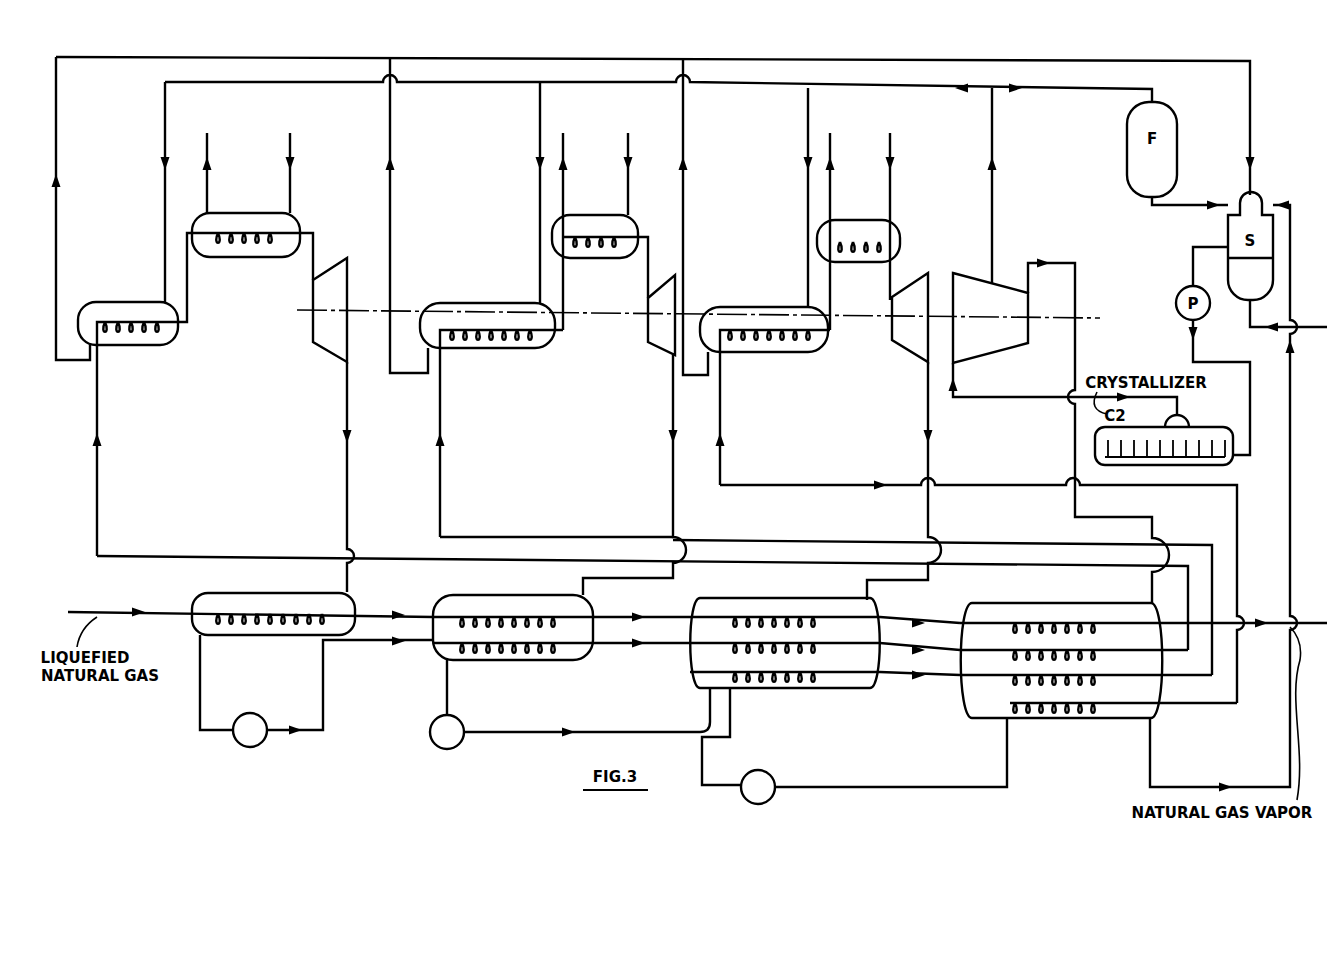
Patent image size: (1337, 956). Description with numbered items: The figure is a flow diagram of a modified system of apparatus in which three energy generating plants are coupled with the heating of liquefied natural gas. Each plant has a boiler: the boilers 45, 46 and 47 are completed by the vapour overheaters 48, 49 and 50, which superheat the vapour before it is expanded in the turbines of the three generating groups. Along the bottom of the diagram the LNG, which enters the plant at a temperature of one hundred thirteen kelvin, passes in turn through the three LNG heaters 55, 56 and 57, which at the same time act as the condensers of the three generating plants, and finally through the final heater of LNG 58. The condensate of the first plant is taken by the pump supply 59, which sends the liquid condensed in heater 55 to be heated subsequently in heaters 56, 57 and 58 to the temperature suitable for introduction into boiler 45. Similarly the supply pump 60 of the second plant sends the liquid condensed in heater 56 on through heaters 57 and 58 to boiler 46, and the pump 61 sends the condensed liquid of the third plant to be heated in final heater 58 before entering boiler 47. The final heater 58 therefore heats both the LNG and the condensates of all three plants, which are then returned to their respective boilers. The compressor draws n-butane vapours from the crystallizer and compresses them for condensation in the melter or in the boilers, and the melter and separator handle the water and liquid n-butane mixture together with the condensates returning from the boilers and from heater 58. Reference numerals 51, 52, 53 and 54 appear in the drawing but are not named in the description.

The boiler 45 is at (128, 310).
The boiler 46 is at (487, 311).
The boiler 47 is at (764, 314).
The vapour overheater 48 is at (246, 221).
The vapour overheater 49 is at (595, 222).
The vapour overheater 50 is at (858, 227).
The compressor C1 51 is at (990, 305).
The expansion turbine I 52 is at (330, 323).
The expansion turbine II 53 is at (658, 329).
The expansion turbine III 54 is at (910, 330).
The LNG heater 55 is at (273, 605).
The LNG heater 56 is at (513, 618).
The LNG heater 57 is at (785, 634).
The final heater of LNG 58 is at (1062, 649).
The pump supply 59 is at (259, 742).
The supply pump 60 is at (454, 745).
The pump 61 is at (769, 779).